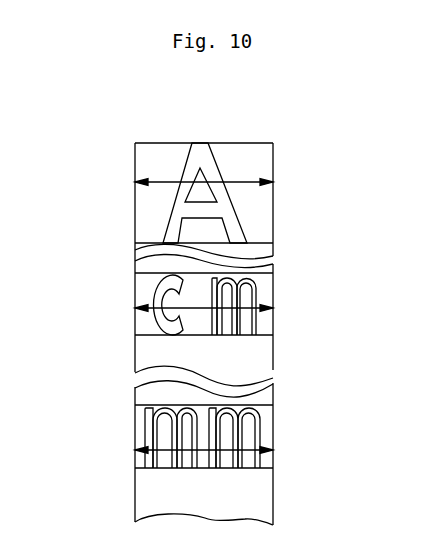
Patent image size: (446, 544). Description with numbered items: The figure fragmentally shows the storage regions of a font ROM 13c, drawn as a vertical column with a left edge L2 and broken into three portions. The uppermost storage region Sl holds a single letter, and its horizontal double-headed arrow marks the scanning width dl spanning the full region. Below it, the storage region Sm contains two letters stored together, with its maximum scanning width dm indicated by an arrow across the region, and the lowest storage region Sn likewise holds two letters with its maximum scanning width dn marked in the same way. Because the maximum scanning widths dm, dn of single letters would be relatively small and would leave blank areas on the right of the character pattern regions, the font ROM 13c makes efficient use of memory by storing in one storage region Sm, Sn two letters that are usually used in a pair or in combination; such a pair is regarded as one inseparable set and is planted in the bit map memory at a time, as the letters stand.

The font ROM 13c is at (164, 318).
The left edge line of display column L2 is at (135, 205).
The width of section Sl dl is at (172, 182).
The first display section (letter A) Sl is at (268, 210).
The maximum scanning width dm is at (166, 318).
The storage region Sm is at (268, 297).
The maximum scanning width dn is at (161, 448).
The storage region Sn is at (268, 460).